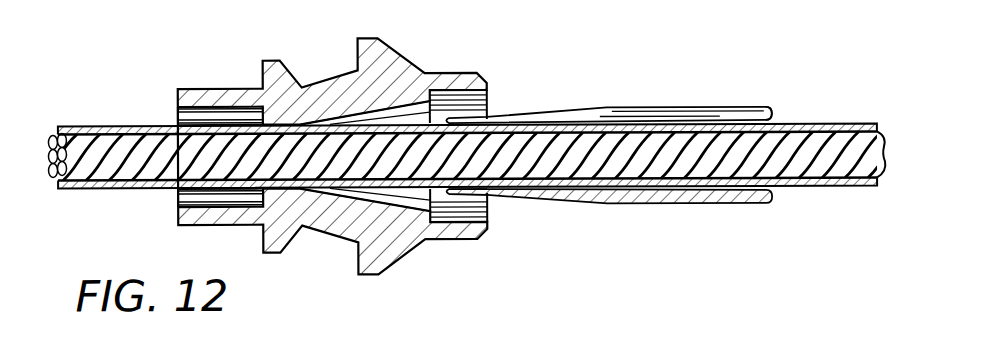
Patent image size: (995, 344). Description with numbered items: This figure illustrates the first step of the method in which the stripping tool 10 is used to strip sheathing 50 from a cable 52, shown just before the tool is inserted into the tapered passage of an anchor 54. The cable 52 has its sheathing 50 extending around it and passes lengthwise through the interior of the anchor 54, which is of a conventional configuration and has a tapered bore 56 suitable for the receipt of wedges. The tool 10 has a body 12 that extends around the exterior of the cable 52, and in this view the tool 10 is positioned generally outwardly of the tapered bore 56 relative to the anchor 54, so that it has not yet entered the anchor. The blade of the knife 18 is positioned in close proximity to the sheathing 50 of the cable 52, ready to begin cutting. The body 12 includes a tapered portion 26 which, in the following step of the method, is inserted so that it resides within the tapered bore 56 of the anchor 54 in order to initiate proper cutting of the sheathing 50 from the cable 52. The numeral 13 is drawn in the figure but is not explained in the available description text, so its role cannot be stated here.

The tool 10 is at (697, 73).
The body 12 is at (608, 105).
The sleeve end 13 is at (737, 107).
The knife 18 is at (445, 190).
The tapered portion 26 is at (525, 109).
The sheathing 50 is at (828, 122).
The cable 52 is at (855, 185).
The anchor 54 is at (404, 62).
The tapered bore 56 is at (420, 200).